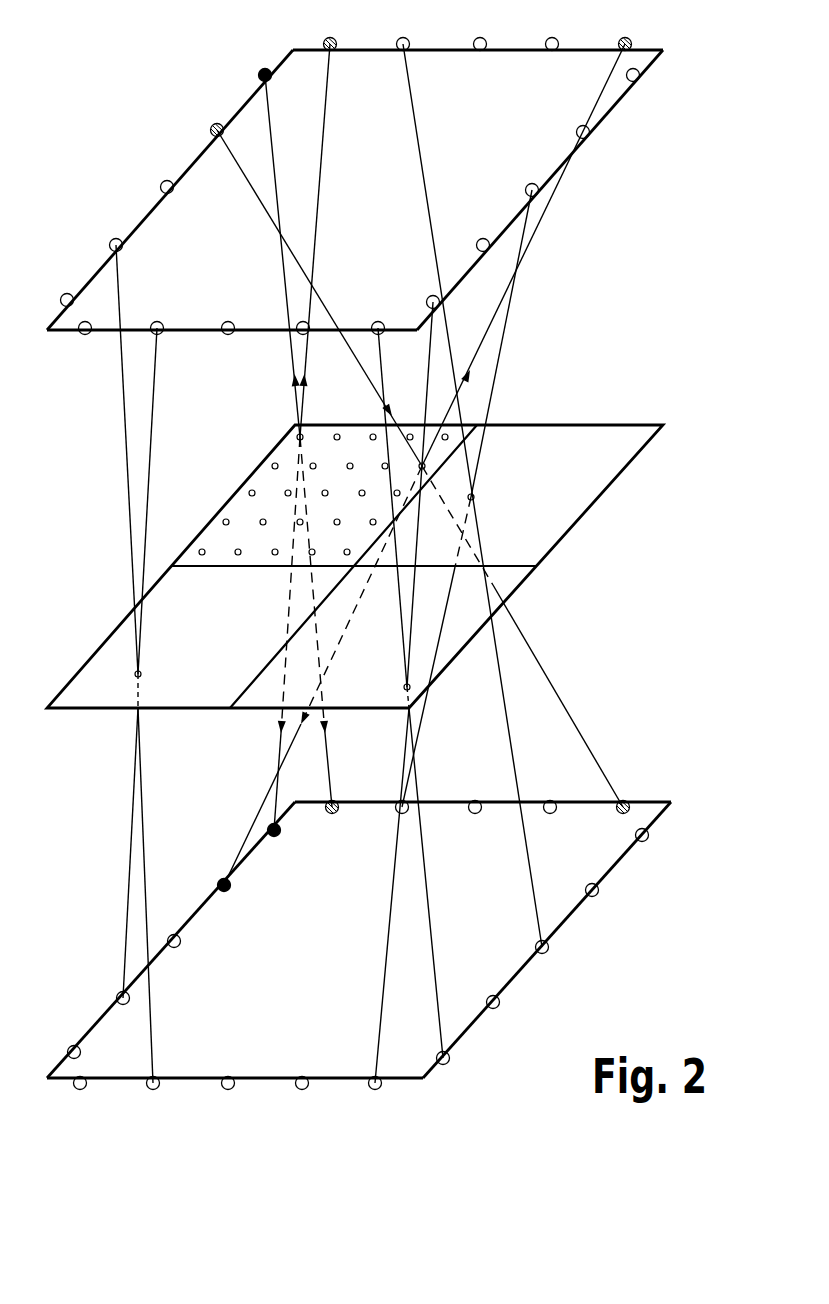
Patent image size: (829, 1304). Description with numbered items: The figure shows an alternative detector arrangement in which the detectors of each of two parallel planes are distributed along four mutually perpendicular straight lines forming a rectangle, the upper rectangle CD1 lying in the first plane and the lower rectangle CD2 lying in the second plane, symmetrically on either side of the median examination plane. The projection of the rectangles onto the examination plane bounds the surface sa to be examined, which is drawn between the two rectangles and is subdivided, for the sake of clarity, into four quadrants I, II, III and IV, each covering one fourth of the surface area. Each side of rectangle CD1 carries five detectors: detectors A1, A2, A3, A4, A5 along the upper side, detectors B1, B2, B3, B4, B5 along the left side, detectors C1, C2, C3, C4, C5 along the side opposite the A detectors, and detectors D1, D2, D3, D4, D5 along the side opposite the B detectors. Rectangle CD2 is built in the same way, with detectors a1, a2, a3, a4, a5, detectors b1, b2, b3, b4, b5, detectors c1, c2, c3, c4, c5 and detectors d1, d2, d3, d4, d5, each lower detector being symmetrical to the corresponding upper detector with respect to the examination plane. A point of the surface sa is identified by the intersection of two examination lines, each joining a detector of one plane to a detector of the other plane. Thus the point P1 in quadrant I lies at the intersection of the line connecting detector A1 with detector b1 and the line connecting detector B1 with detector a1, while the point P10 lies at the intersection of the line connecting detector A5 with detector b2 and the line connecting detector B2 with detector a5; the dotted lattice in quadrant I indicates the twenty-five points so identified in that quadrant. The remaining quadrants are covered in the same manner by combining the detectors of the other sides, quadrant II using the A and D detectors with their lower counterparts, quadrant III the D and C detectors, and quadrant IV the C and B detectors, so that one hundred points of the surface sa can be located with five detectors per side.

The rectangle of detectors in the first plane CD1 is at (368, 196).
The detector A1 is at (325, 41).
The detector A2 is at (398, 41).
The detector A3 is at (479, 39).
The detector A4 is at (550, 39).
The detector A5 is at (624, 39).
The detector B1 is at (260, 72).
The detector B2 is at (211, 128).
The detector B3 is at (161, 186).
The detector B4 is at (110, 243).
The detector B5 is at (61, 298).
The detector C1 is at (381, 334).
The detector C2 is at (306, 334).
The detector C3 is at (228, 334).
The detector C4 is at (158, 334).
The detector C5 is at (85, 334).
The detector D1 is at (439, 300).
The detector D2 is at (480, 239).
The detector D3 is at (528, 185).
The detector D4 is at (589, 135).
The detector D5 is at (638, 78).
The surface to be examined sa is at (371, 571).
The first quadrant I is at (253, 480).
The second quadrant II is at (558, 436).
The third quadrant III is at (441, 660).
The fourth quadrant IV is at (118, 690).
The examined point P1 is at (303, 432).
The examined point P10 is at (427, 466).
The rectangle of detectors in the second plane CD2 is at (372, 949).
The detector a1 is at (332, 814).
The detector a2 is at (397, 806).
The detector a3 is at (475, 814).
The detector a4 is at (550, 814).
The detector a5 is at (618, 810).
The detector b1 is at (279, 834).
The detector b2 is at (231, 887).
The detector b3 is at (180, 946).
The detector b4 is at (124, 1004).
The detector b5 is at (80, 1054).
The detector c1 is at (375, 1089).
The detector c2 is at (302, 1089).
The detector c3 is at (228, 1089).
The detector c4 is at (153, 1089).
The detector c5 is at (81, 1089).
The detector d1 is at (449, 1060).
The detector d2 is at (499, 1004).
The detector d3 is at (548, 949).
The detector d4 is at (598, 892).
The detector d5 is at (648, 837).